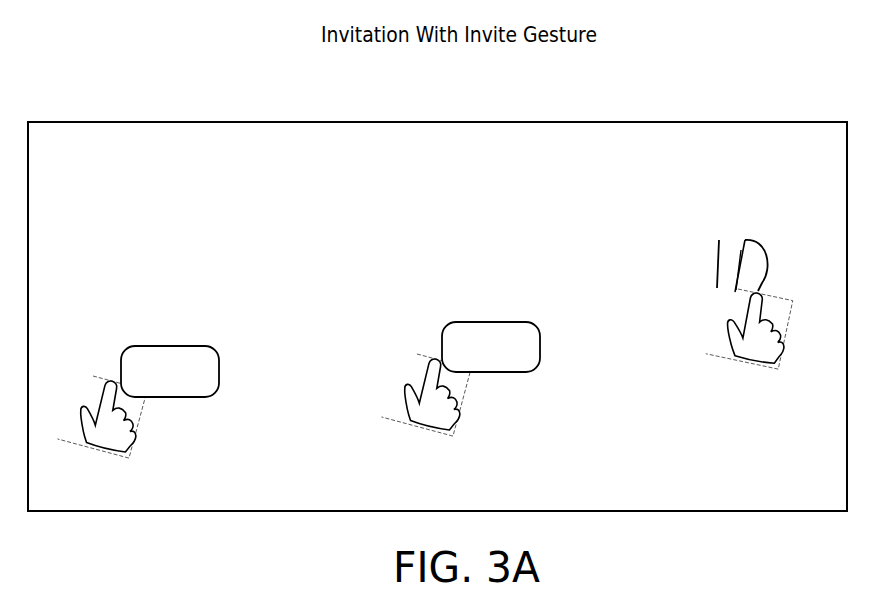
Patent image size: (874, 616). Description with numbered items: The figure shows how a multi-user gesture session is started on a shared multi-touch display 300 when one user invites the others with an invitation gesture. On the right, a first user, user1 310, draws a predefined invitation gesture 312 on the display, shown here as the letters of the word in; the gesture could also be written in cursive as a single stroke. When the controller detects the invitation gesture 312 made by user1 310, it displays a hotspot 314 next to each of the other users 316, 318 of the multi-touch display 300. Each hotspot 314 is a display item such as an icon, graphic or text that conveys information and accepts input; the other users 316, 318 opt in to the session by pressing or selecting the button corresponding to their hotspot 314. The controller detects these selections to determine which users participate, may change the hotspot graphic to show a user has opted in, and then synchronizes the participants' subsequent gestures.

The multi-touch display 300 is at (619, 84).
The user1 310 is at (737, 356).
The predefined invitation gesture 312 is at (678, 240).
The hotspot 314 is at (170, 346).
The user 316 is at (410, 422).
The user 318 is at (130, 455).